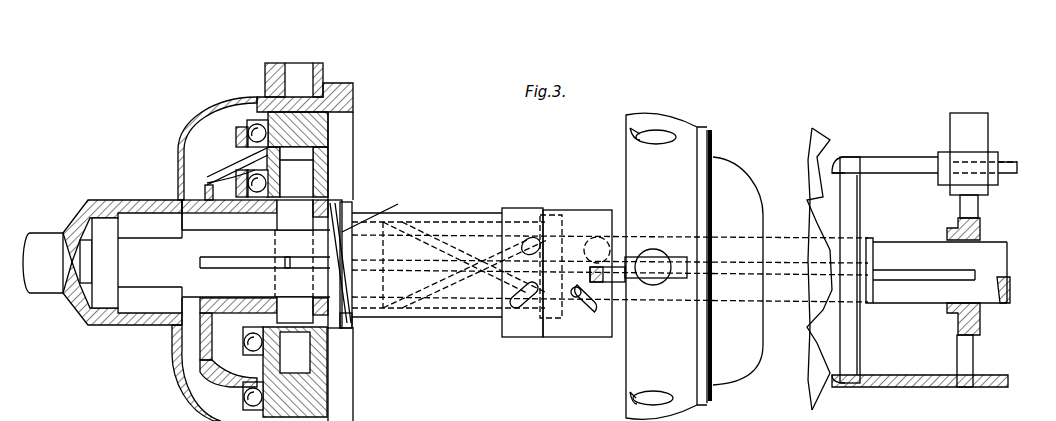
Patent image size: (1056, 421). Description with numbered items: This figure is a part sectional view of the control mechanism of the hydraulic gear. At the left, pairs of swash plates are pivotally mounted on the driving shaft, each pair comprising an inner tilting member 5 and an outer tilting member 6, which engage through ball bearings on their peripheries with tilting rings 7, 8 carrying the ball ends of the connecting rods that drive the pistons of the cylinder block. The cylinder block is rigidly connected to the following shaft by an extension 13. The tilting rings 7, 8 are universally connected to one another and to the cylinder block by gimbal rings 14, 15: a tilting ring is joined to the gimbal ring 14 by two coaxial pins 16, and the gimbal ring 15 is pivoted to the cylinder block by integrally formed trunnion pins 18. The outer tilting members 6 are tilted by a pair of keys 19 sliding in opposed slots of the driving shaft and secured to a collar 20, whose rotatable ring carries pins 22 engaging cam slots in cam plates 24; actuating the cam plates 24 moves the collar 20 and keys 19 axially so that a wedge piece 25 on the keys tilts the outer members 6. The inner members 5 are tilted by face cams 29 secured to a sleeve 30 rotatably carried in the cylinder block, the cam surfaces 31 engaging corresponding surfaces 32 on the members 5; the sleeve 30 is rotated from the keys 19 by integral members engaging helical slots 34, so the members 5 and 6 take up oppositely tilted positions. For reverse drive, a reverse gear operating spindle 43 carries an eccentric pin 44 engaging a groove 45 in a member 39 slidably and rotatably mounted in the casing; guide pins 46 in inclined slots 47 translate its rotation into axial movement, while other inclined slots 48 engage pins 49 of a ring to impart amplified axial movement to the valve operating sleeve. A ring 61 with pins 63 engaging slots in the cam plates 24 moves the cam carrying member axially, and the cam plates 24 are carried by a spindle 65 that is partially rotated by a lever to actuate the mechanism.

The inner tilting member 5 is at (207, 183).
The outer tilting member 6 is at (213, 167).
The tilting ring 7 is at (340, 195).
The tilting ring 8 is at (327, 143).
The extension 13 is at (182, 146).
The gimbal ring 14 is at (323, 165).
The gimbal ring 15 is at (330, 112).
The coaxial pins 16 is at (349, 360).
The trunnion pins 18 is at (298, 73).
The keys 19 is at (420, 265).
The collar 20 is at (980, 317).
The pins 22 is at (970, 208).
The cam plates 24 is at (898, 165).
The wedge piece 25 is at (240, 267).
The face cams 29 is at (352, 322).
The sleeve 30 is at (484, 216).
The cam surfaces 31 is at (379, 211).
The surfaces 32 is at (330, 258).
The helical slots 34 is at (452, 292).
The member 39 is at (555, 218).
The reverse gear operating spindle 43 is at (652, 260).
The eccentric pin 44 is at (617, 267).
The groove 45 is at (594, 247).
The guide pins 46 is at (533, 293).
The inclined slots 47 is at (515, 303).
The inclined slots 48 is at (592, 312).
The pins 49 is at (574, 296).
The ring 61 is at (850, 222).
The pins 63 is at (850, 160).
The spindle 65 is at (960, 123).